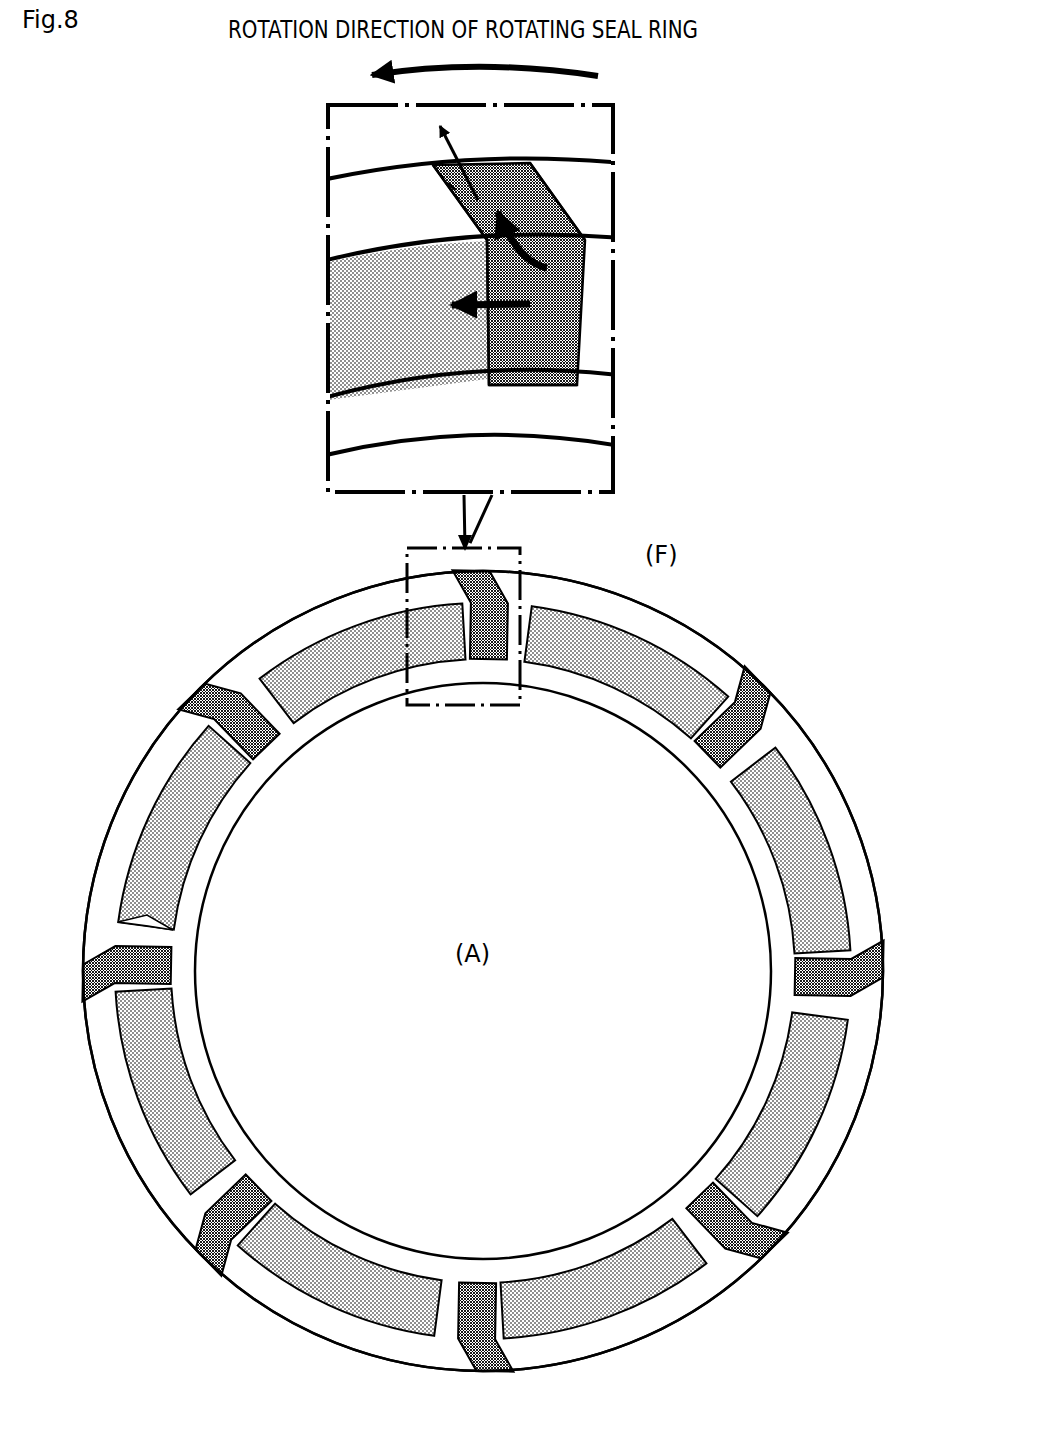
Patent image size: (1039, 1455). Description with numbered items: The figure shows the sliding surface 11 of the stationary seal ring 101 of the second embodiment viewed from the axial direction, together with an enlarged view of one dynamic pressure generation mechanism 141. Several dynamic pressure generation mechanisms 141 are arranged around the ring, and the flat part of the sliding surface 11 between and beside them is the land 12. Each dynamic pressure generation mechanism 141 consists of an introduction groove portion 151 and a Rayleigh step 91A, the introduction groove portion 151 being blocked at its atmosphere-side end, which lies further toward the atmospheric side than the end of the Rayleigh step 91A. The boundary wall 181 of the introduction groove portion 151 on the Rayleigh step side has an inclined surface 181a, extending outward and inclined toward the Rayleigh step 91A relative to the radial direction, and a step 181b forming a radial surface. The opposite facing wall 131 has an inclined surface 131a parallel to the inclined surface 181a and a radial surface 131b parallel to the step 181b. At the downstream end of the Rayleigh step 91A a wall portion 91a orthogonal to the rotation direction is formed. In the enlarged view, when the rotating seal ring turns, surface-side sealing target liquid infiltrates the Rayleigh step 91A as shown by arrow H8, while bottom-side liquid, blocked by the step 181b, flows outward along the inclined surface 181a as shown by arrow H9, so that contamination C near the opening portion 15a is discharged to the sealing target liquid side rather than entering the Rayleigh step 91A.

The stationary seal ring 101 is at (732, 621).
The sliding surface 11 is at (732, 786).
The land 12 is at (765, 850).
The dynamic pressure generation mechanism 141 is at (405, 792).
The introduction groove portion 151 is at (274, 744).
The Rayleigh step 91A is at (172, 822).
The wall portion 91a is at (165, 913).
The opening portion 15a is at (184, 690).
The facing wall 131 is at (222, 690).
The inclined surface 131a is at (548, 194).
The radial surface 131b is at (579, 372).
The boundary wall 181 is at (183, 705).
The inclined surface 181a is at (455, 193).
The step 181b is at (487, 380).
The contamination C is at (450, 186).
The arrow H9 is at (585, 256).
The arrow H8 is at (582, 310).